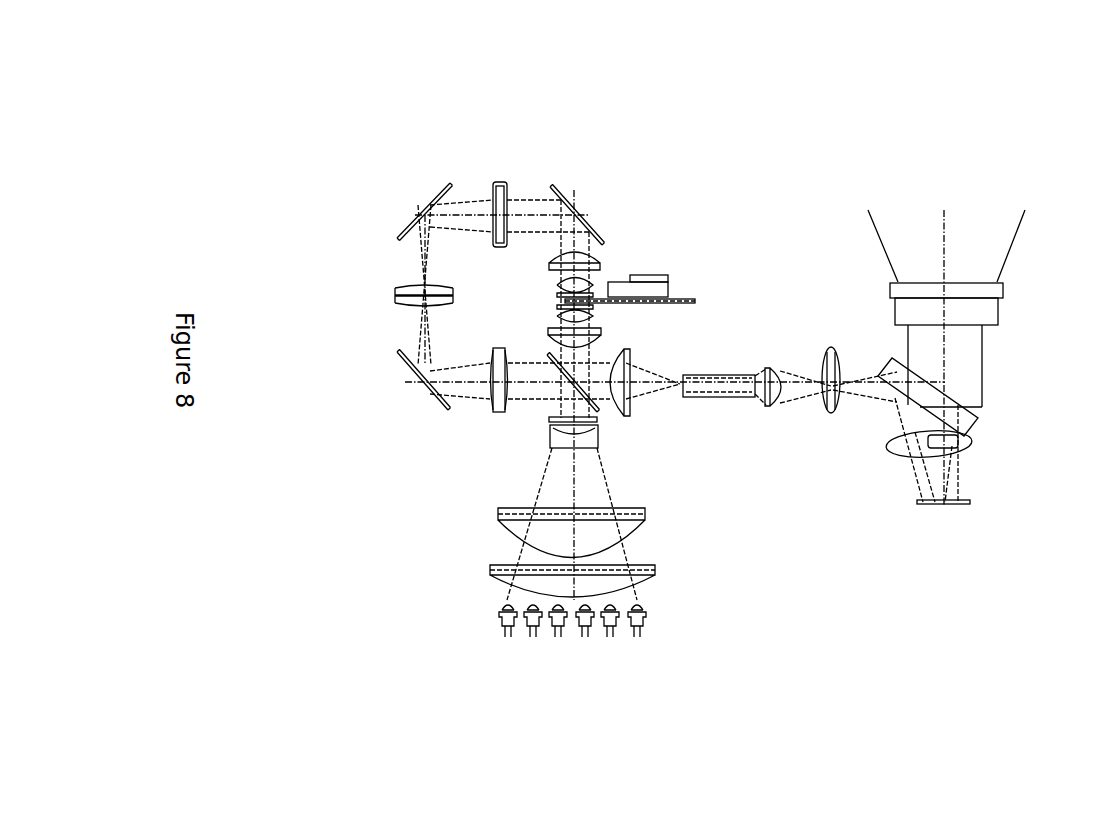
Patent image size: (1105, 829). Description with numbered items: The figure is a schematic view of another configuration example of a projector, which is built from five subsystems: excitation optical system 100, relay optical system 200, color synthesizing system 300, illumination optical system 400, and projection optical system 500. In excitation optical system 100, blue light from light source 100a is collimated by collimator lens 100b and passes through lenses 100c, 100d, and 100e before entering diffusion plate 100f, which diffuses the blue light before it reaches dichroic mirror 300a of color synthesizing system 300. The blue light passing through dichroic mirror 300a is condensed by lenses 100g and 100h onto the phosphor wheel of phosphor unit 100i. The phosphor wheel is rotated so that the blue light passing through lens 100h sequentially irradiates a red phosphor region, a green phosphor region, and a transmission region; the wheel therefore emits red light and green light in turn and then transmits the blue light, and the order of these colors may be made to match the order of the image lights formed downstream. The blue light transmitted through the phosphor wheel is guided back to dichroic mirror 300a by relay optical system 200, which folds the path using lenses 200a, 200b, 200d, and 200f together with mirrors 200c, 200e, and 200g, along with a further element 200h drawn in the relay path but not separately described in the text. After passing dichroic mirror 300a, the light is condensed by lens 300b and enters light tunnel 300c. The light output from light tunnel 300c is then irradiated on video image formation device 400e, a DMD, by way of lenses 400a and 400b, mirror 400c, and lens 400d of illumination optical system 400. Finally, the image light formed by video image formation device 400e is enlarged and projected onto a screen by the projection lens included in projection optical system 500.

The excitation optical system 100 is at (447, 430).
The light source 100a is at (502, 617).
The collimator lens 100b is at (505, 603).
The lens 100c is at (492, 568).
The lens 100d is at (498, 512).
The lens 100e is at (550, 440).
The diffusion plate 100f is at (549, 420).
The lens 100g is at (601, 333).
The lens 100h is at (593, 308).
The phosphor unit 100i is at (652, 292).
The relay optical system 200 is at (663, 143).
The lens 200a is at (557, 286).
The lens 200b is at (598, 263).
The mirror 200c is at (552, 186).
The lens 200d is at (502, 183).
The mirror 200e is at (403, 233).
The lens 200f is at (395, 295).
The mirror 200g is at (400, 362).
The lens 200h is at (496, 348).
The color synthesizing system 300 is at (736, 450).
The dichroic mirror 300a is at (598, 413).
The lens 300b is at (630, 412).
The light tunnel 300c is at (722, 397).
The illumination optical system 400 is at (888, 320).
The lens 400a is at (770, 408).
The lens 400b is at (828, 352).
The mirror 400c is at (890, 364).
The lens 400d is at (890, 448).
The video image formation device (DMD) 400e is at (922, 503).
The projection optical system 500 is at (980, 384).